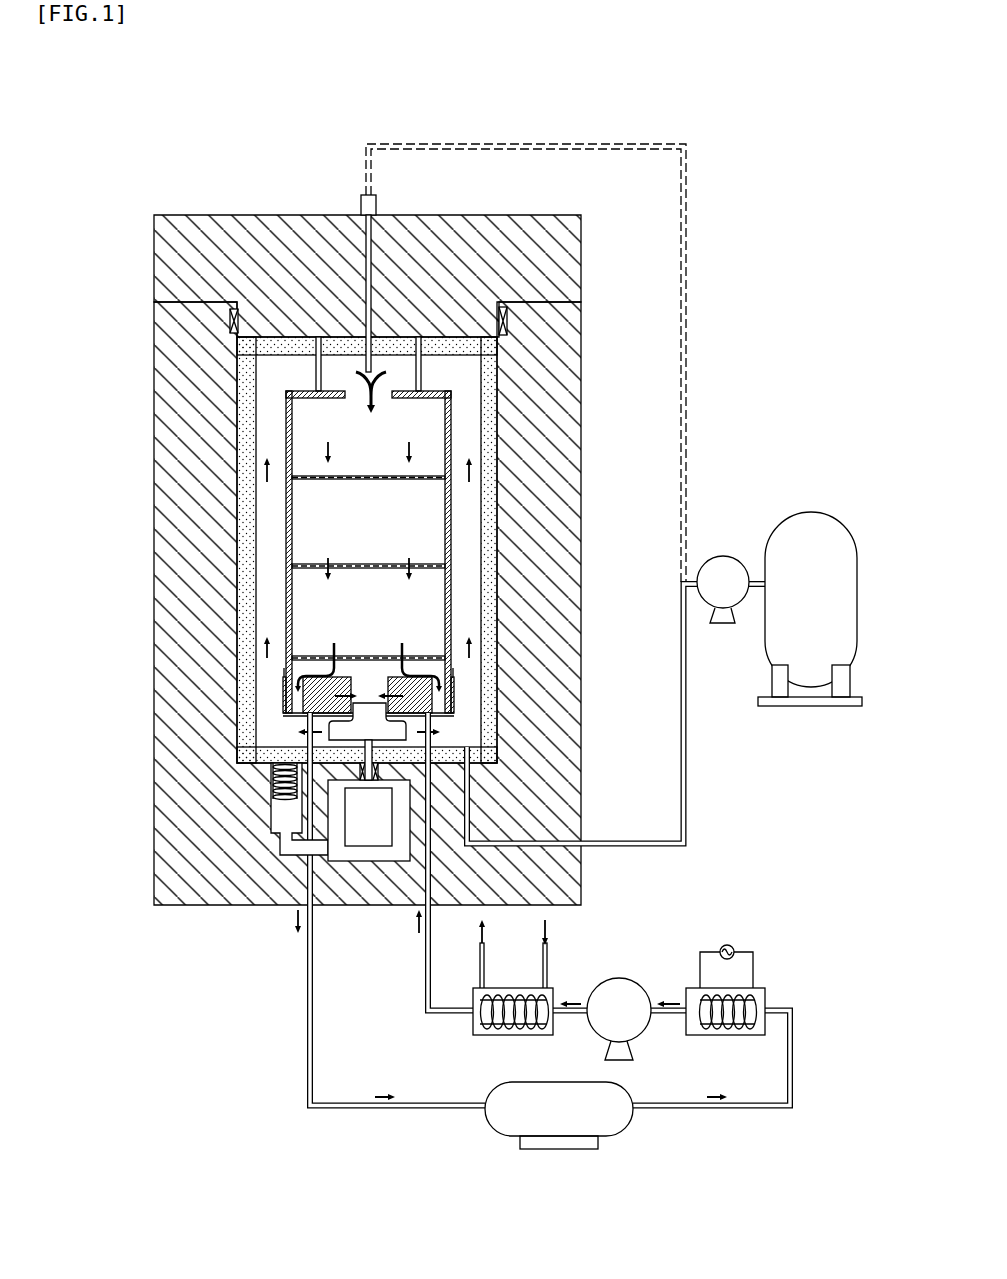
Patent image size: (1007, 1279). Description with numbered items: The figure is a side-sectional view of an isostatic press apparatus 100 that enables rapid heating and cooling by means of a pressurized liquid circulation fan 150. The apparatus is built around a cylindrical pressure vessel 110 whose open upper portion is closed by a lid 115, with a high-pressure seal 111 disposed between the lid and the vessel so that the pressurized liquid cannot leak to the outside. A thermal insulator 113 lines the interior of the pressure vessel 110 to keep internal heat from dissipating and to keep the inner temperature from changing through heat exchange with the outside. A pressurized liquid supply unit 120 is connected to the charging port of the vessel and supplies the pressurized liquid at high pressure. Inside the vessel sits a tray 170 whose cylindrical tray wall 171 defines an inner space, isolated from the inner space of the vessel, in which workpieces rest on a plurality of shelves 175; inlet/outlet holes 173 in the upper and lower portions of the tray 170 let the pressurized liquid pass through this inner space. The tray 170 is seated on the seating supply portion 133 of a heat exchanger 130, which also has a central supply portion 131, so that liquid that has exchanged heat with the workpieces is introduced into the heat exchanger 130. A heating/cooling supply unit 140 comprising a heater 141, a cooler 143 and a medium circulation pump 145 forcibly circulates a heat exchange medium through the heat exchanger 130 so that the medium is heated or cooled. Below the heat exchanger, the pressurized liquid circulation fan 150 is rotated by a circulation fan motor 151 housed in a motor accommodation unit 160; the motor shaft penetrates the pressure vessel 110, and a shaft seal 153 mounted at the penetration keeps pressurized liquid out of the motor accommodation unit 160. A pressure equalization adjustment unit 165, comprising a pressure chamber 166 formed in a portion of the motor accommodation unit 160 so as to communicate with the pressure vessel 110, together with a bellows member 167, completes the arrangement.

The isostatic press apparatus 100 is at (383, 498).
The pressure vessel 110 is at (414, 550).
The high-pressure seal 111 is at (510, 320).
The thermal insulator 113 is at (492, 497).
The lid 115 is at (562, 265).
The pressurized liquid supply unit 120 is at (754, 522).
The heat exchanger 130 is at (464, 698).
The central supply portion 131 is at (384, 701).
The seating supply portion 133 is at (453, 680).
The heating/cooling supply unit 140 is at (600, 1011).
The heater 141 is at (755, 1003).
The cooler 143 is at (522, 988).
The medium circulation pump 145 is at (616, 978).
The pressurized liquid circulation fan 150 is at (410, 800).
The circulation fan motor 151 is at (378, 846).
The shaft seal 153 is at (357, 770).
The motor accommodation unit 160 is at (347, 862).
The pressure equalization adjustment unit 165 is at (180, 810).
The pressure chamber 166 is at (270, 808).
The bellows member 167 is at (272, 775).
The tray 170 is at (269, 553).
The tray wall 171 is at (287, 510).
The inlet/outlet holes 173 is at (362, 400).
The shelves 175 is at (322, 563).